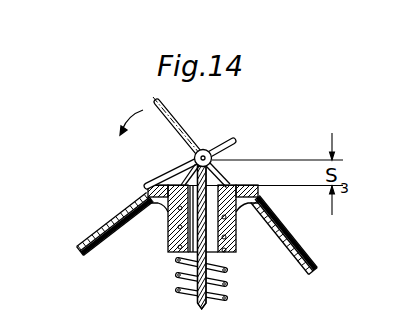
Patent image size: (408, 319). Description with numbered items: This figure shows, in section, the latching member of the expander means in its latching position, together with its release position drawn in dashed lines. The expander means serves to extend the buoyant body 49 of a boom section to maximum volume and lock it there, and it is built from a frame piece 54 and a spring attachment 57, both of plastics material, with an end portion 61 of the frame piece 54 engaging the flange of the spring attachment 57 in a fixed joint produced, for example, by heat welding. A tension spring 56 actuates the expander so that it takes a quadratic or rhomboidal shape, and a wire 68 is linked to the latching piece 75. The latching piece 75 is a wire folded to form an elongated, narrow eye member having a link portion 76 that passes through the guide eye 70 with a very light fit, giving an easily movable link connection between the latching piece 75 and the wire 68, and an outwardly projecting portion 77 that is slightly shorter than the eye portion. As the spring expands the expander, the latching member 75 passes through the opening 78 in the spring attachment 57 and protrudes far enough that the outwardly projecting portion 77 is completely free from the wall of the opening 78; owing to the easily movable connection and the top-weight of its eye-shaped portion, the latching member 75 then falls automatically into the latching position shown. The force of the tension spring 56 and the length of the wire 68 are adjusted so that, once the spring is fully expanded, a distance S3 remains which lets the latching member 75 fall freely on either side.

The buoyant body 49 is at (95, 240).
The frame piece 54 is at (111, 243).
The tension spring 56 is at (227, 297).
The spring attachment 57 is at (236, 185).
The end portion 61 is at (162, 221).
The wire 68 is at (180, 291).
The guide eye 70 is at (187, 152).
The latching piece 75 is at (146, 186).
The link portion 76 is at (210, 207).
The outwardly projecting portion 77 is at (233, 141).
The opening 78 is at (195, 162).